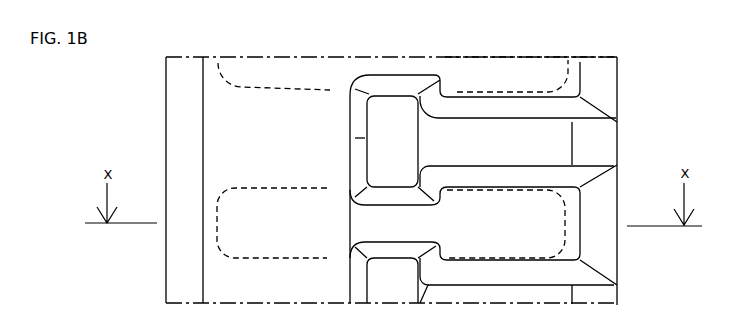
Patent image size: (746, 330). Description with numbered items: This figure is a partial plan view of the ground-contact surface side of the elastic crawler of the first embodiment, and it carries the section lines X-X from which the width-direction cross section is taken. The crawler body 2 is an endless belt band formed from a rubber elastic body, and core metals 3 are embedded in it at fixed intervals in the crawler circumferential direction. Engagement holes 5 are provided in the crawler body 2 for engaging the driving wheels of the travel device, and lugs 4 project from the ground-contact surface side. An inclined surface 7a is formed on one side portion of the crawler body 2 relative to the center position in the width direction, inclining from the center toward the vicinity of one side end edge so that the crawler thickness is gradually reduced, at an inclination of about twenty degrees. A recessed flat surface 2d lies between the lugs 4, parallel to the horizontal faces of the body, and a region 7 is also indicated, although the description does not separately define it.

The crawler body 2 is at (172, 67).
The recessed flat surface 2d is at (547, 140).
The core metal 3 is at (310, 68).
The lug 4 is at (550, 178).
The engagement hole 5 is at (393, 145).
The cover member 7 is at (564, 237).
The inclined surface 7a is at (225, 137).